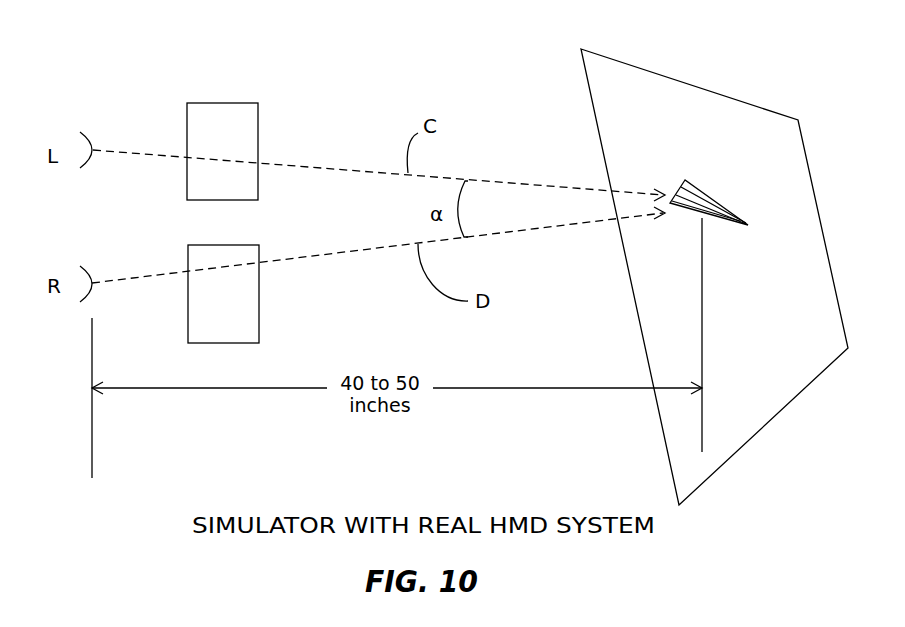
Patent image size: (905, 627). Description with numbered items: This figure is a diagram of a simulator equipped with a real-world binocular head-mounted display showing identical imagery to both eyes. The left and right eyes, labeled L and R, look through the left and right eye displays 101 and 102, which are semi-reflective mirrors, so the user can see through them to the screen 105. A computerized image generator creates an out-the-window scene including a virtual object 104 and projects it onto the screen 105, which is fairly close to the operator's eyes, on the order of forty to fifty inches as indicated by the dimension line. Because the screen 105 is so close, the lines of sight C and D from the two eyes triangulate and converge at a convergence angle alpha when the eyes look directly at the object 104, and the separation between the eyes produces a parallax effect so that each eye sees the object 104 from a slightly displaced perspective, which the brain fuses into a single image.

The left eye display 101 is at (248, 118).
The right eye display 102 is at (259, 333).
The virtual object 104 is at (722, 207).
The screen 105 is at (681, 88).